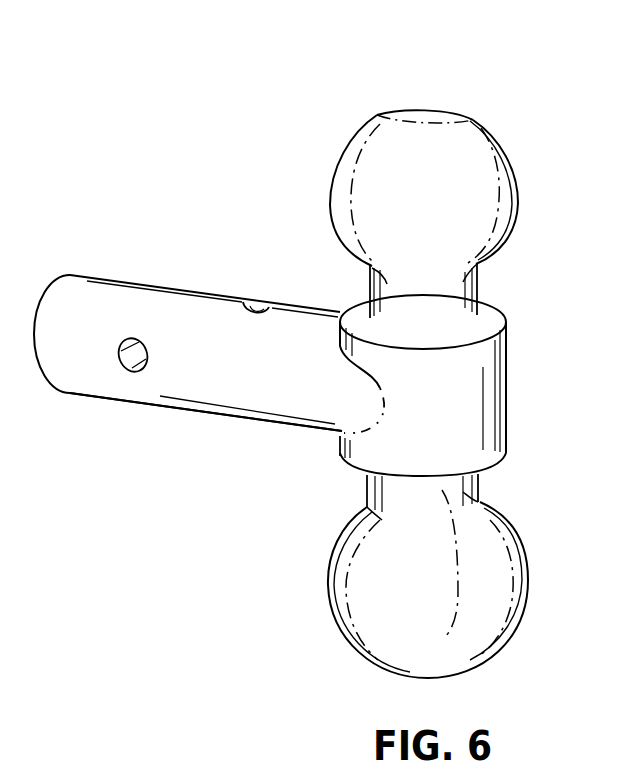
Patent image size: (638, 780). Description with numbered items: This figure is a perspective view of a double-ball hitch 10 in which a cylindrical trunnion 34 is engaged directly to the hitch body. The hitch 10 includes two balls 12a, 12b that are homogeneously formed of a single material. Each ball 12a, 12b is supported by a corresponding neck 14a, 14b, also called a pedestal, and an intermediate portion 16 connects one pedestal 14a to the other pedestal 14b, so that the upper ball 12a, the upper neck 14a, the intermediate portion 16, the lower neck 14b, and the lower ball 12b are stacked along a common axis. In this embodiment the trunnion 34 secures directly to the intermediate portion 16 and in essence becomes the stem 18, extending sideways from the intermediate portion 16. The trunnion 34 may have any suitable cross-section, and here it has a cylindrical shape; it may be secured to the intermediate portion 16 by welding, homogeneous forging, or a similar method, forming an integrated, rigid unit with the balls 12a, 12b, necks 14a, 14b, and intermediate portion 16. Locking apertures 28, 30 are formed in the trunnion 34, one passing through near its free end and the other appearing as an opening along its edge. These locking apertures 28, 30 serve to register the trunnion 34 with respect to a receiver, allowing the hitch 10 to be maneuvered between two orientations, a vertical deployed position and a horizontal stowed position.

The hitch 10 is at (493, 118).
The ball 12a is at (473, 163).
The ball 12b is at (513, 602).
The neck 14a is at (453, 300).
The neck 14b is at (453, 500).
The intermediate portion 16 is at (467, 402).
The stem 18 is at (143, 305).
The locking aperture 28 is at (119, 363).
The locking aperture 30 is at (254, 298).
The trunnion 34 is at (148, 405).